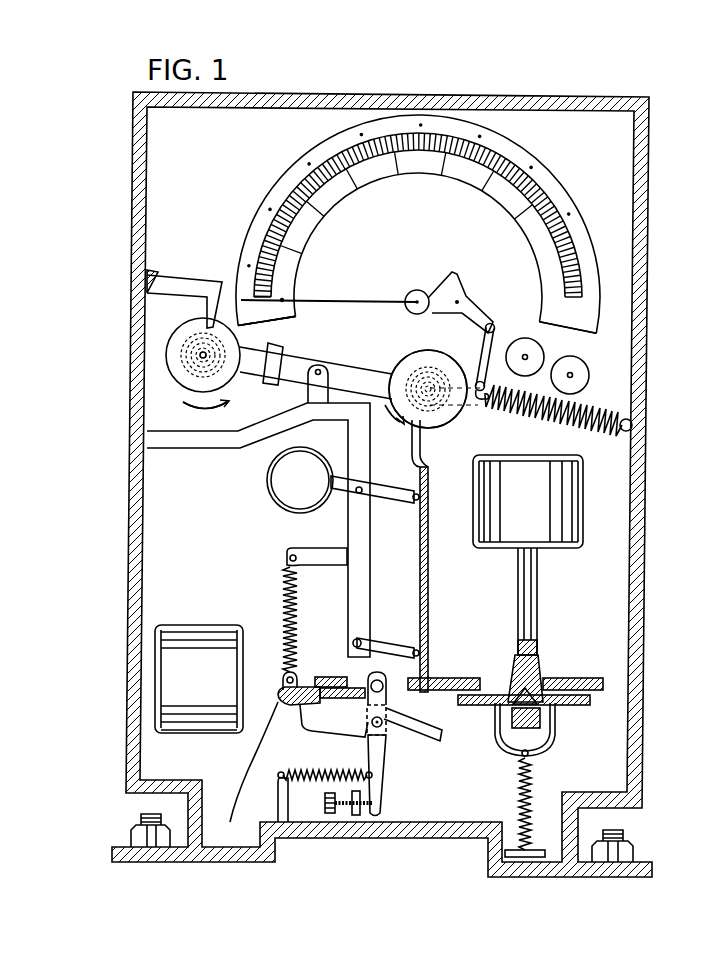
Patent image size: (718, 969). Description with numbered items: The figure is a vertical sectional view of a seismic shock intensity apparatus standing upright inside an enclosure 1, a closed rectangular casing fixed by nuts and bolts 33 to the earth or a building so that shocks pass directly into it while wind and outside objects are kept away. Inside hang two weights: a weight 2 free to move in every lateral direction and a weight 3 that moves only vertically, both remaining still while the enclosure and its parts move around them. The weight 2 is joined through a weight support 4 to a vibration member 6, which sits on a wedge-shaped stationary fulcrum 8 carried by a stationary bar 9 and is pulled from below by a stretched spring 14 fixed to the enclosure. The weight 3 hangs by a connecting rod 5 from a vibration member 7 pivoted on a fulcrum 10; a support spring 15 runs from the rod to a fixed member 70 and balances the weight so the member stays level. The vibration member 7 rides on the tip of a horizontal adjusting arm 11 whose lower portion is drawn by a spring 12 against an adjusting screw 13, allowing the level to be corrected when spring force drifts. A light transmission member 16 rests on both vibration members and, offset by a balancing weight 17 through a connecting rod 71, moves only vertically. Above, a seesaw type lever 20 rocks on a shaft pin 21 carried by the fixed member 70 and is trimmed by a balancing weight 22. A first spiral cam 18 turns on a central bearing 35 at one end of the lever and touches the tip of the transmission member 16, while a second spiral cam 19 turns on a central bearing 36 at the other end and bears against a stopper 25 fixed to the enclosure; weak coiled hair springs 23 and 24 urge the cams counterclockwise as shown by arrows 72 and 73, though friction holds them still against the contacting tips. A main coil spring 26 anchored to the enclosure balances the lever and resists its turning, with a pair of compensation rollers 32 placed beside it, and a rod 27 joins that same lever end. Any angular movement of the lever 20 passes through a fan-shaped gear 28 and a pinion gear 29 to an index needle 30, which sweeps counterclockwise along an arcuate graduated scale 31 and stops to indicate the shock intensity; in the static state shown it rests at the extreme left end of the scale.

The enclosure 1 is at (649, 283).
The weight 2 is at (584, 495).
The weight 3 is at (176, 657).
The weight support 4 is at (538, 598).
The connecting rod 5 is at (278, 695).
The vibration member 6 is at (596, 702).
The vibration member 7 is at (230, 822).
The stationary fulcrum 8 is at (540, 712).
The stationary bar 9 is at (547, 730).
The fulcrum 10 is at (407, 742).
The horizontal adjusting arm 11 is at (296, 780).
The spring 12 is at (306, 785).
The adjusting screw 13 is at (338, 815).
The stretched spring 14 is at (520, 797).
The support spring 15 is at (287, 580).
The transmission member 16 is at (470, 665).
The balancing weight 17 is at (240, 445).
The first spiral cam 18 is at (400, 297).
The second spiral cam 19 is at (166, 360).
The seesaw type lever 20 is at (242, 290).
The shaft pin 21 is at (318, 362).
The balancing weight 22 is at (270, 385).
The coiled hair spring 23 is at (400, 360).
The coiled hair spring 24 is at (203, 355).
The stopper 25 is at (173, 277).
The main coil spring 26 is at (600, 416).
The rod 27 is at (580, 272).
The fan-shaped gear 28 is at (464, 283).
The pinion gear 29 is at (416, 288).
The index needle 30 is at (278, 222).
The arcuate graduated scale 31 is at (435, 114).
The compensation rollers 32 is at (545, 352).
The nuts and bolts 33 is at (628, 846).
The central bearing 35 is at (468, 408).
The central bearing 36 is at (188, 338).
The fixed member 70 is at (430, 553).
The connecting rod 71 is at (347, 537).
The arrow 72 is at (271, 483).
The arrow 73 is at (182, 403).